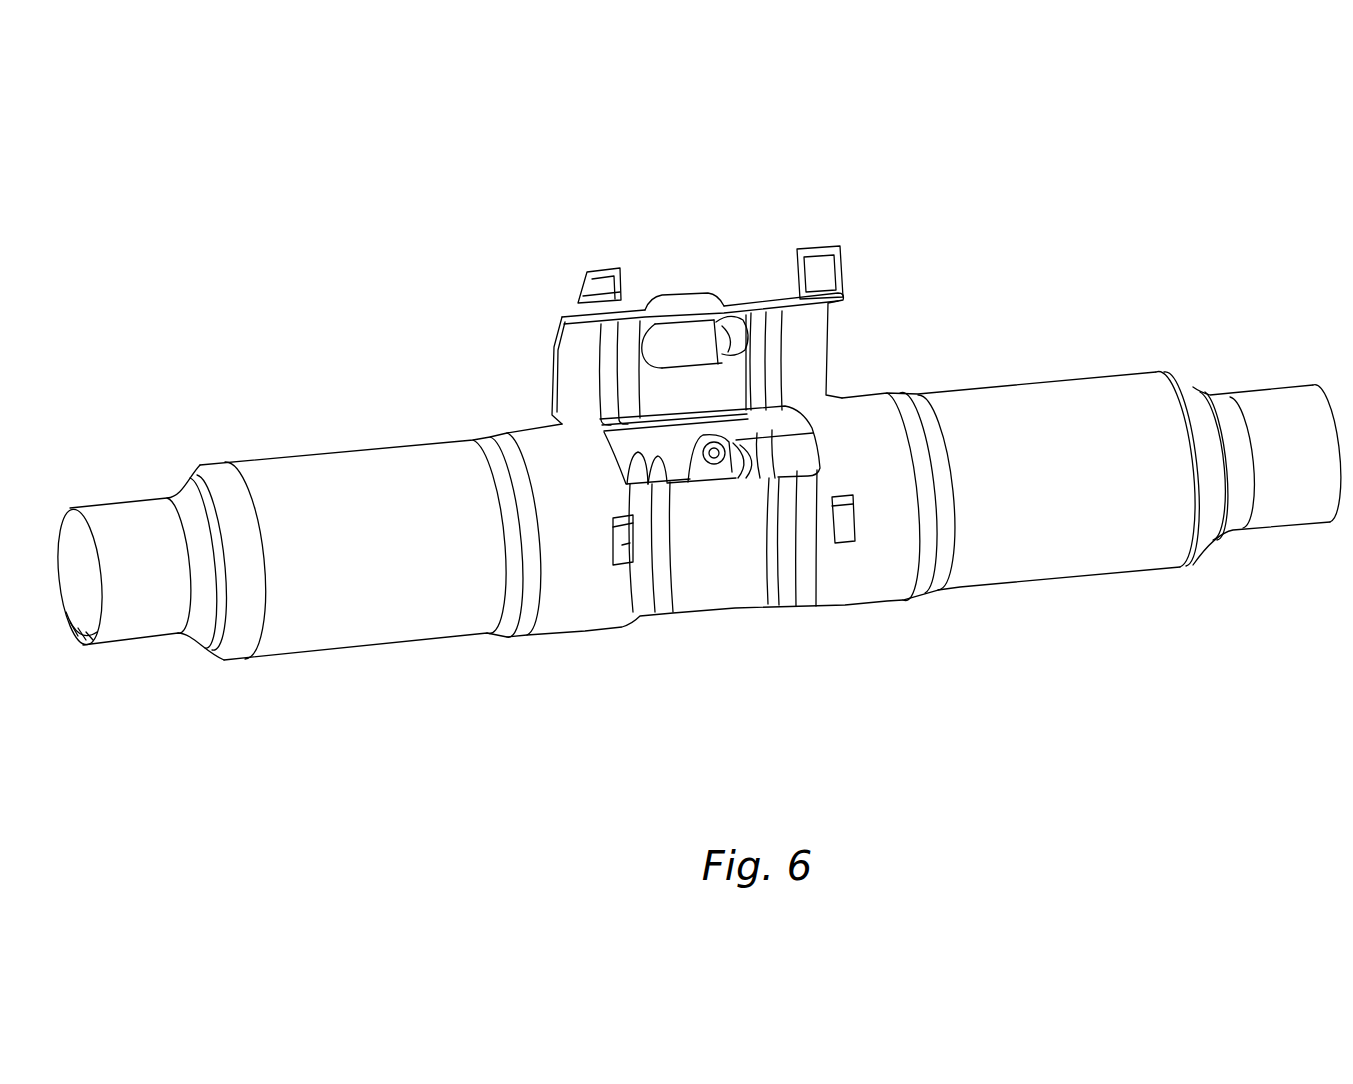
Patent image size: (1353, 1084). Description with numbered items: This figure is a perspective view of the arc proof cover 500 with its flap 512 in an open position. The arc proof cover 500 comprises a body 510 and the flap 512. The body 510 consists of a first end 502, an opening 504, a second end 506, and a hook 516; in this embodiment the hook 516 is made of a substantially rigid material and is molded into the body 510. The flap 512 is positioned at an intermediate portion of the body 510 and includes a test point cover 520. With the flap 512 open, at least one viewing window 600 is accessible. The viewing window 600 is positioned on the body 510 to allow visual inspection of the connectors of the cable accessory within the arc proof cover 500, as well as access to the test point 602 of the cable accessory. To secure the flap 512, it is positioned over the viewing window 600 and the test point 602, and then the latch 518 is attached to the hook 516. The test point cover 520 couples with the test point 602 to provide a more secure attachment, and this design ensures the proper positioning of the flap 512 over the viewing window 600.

The arc proof cover 500 is at (815, 139).
The first end 502 is at (142, 488).
The opening 504 is at (66, 626).
The second end 506 is at (1275, 378).
The body 510 is at (370, 432).
The flap 512 is at (540, 394).
The hook 516 is at (630, 560).
The latch 518 is at (598, 300).
The test point cover 520 is at (688, 295).
The viewing window 600 is at (813, 434).
The test point 602 is at (718, 477).